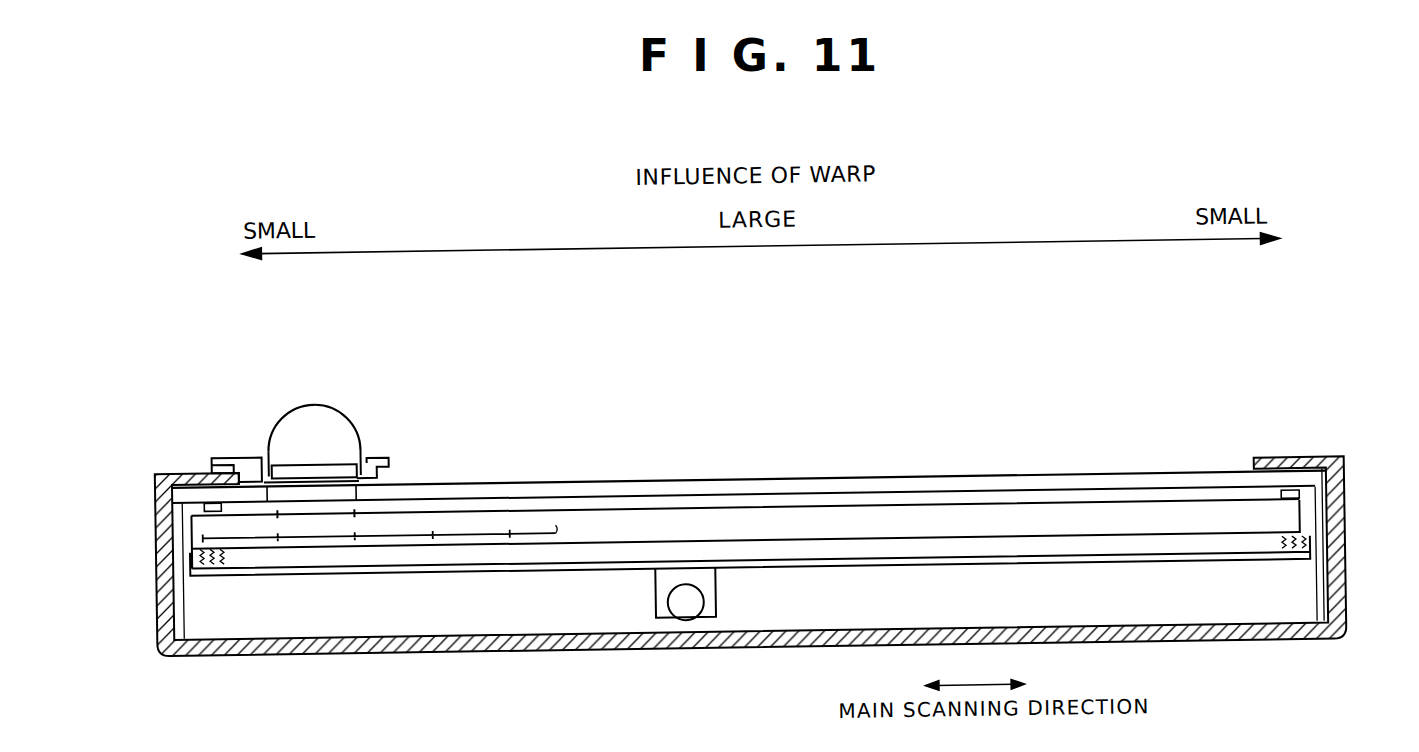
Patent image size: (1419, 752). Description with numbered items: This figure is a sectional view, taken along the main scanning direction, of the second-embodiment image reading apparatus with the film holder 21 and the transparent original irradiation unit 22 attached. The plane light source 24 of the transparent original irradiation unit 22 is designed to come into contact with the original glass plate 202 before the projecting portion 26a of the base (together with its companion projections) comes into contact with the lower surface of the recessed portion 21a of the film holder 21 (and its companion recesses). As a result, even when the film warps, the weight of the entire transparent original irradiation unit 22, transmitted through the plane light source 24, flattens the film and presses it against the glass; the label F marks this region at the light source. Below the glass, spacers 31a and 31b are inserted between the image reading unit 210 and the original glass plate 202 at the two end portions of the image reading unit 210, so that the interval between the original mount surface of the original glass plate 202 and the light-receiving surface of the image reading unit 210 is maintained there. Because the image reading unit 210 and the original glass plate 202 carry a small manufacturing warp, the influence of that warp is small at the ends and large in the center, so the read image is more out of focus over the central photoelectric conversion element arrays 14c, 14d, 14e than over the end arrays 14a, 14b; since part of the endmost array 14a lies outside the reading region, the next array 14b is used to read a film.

The photoelectric conversion element array 14a is at (273, 484).
The photoelectric conversion element array 14b is at (329, 504).
The photoelectric conversion element array 14c is at (397, 525).
The photoelectric conversion element array 14d is at (475, 535).
The photoelectric conversion element array 14e is at (549, 535).
The film holder 21 is at (221, 448).
The recessed portion 21a is at (385, 465).
The transparent original irradiation unit 22 is at (294, 431).
The plane light source 24 is at (323, 464).
The projecting portion 26a is at (269, 465).
The focal point F is at (338, 464).
The spacer 31a is at (208, 490).
The spacer 31b is at (1291, 500).
The original glass plate 202 is at (1049, 488).
The image reading unit 210 is at (1300, 523).